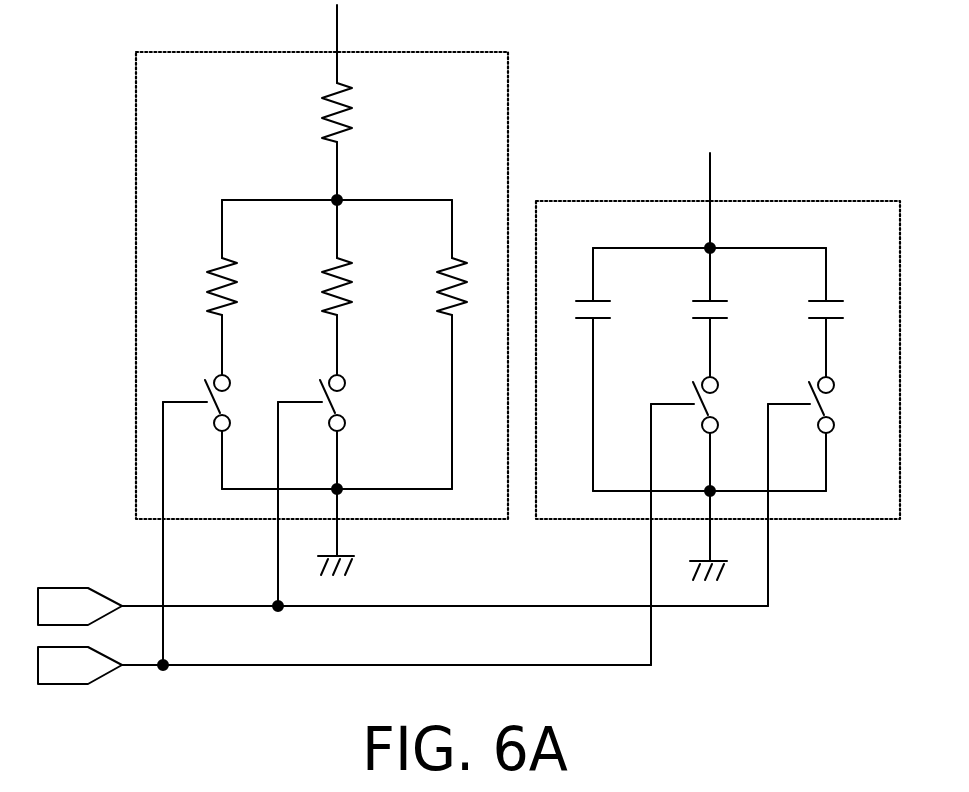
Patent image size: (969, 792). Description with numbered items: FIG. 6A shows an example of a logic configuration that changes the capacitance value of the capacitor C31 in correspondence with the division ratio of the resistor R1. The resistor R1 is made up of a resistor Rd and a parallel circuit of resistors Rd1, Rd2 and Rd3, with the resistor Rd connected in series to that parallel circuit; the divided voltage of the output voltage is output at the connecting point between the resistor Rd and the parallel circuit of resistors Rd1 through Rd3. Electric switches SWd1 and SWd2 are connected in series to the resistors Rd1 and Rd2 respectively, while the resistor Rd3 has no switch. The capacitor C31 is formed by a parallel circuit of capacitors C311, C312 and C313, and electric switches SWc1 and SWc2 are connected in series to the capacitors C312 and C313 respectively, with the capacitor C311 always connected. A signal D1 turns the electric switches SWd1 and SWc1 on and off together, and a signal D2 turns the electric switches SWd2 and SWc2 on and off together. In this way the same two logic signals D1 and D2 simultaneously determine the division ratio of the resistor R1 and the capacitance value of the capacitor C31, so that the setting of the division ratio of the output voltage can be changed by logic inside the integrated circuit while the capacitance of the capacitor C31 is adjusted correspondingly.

The resistor R1 is at (450, 52).
The resistor Rd is at (360, 113).
The resistor Rd1 is at (205, 280).
The resistor Rd2 is at (320, 280).
The resistor Rd3 is at (437, 282).
The electric switch SWd1 is at (233, 402).
The electric switch SWd2 is at (348, 402).
The capacitor C31 is at (798, 202).
The capacitor C311 is at (612, 312).
The capacitor C312 is at (750, 293).
The capacitor C313 is at (842, 315).
The electric switch SWc1 is at (727, 405).
The electric switch SWc2 is at (842, 405).
The signal D1 is at (344, 543).
The signal D2 is at (403, 513).